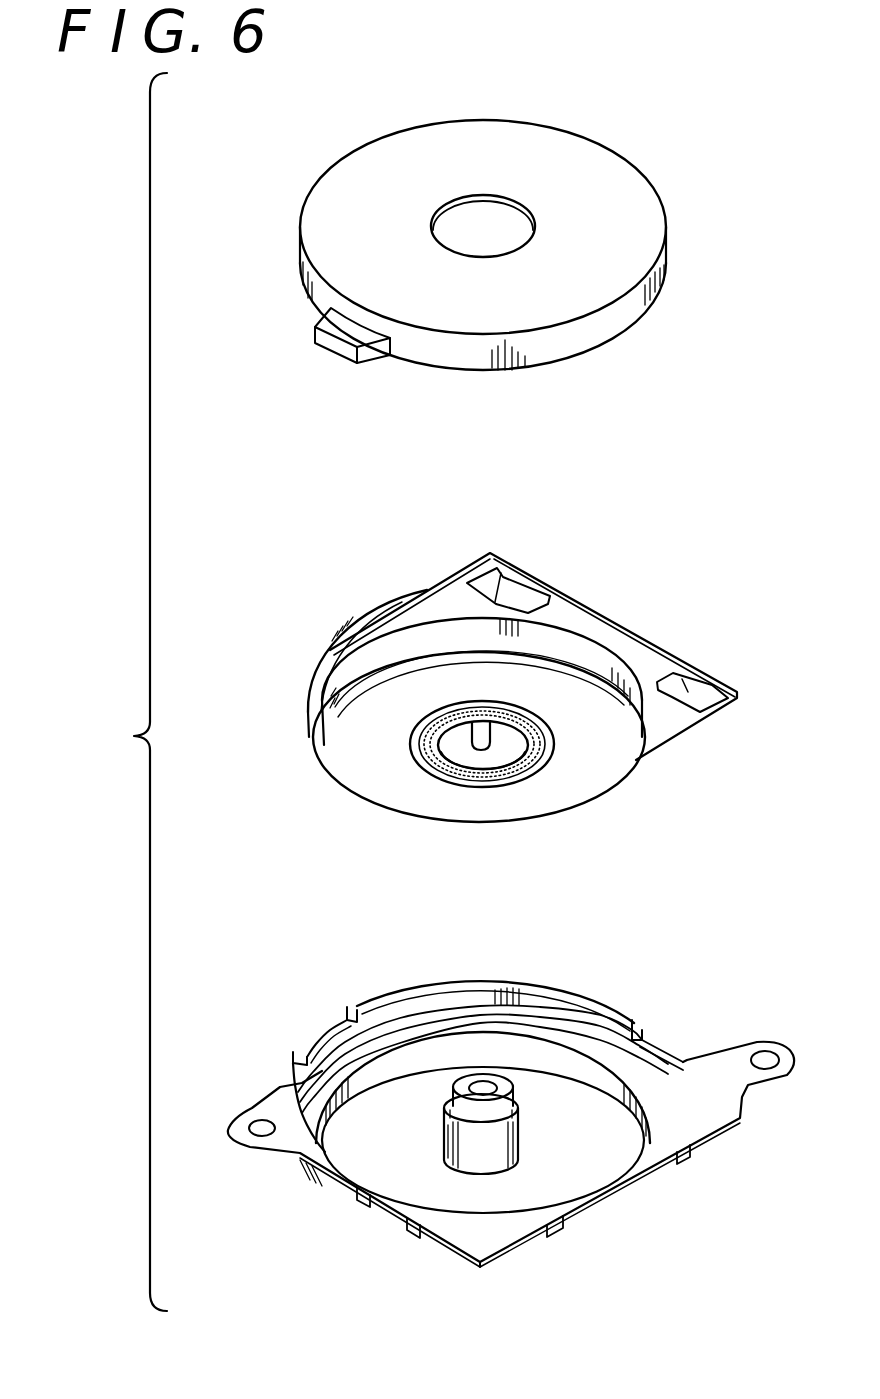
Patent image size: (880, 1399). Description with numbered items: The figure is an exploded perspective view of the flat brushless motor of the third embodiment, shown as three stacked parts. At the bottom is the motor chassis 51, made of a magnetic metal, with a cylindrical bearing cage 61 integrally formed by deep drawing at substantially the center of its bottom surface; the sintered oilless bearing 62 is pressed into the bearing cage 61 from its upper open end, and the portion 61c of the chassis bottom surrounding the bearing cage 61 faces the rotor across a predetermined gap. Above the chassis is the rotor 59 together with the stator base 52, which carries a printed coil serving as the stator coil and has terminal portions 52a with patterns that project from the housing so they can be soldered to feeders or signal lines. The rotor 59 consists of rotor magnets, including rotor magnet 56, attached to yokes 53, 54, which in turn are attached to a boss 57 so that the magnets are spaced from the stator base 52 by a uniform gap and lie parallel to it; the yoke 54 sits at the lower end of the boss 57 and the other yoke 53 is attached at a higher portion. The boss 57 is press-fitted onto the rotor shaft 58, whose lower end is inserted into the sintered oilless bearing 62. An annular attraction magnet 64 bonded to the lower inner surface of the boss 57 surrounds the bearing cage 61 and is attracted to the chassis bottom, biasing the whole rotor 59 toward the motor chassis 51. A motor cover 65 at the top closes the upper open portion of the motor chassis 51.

The motor chassis 51 is at (500, 1238).
The stator base 52 is at (633, 652).
The terminal portions 52a is at (498, 573).
The yoke 53 is at (363, 617).
The yoke 54 is at (623, 752).
The rotor magnet 56 is at (567, 633).
The boss 57 is at (440, 757).
The rotor shaft 58 is at (495, 733).
The rotor 59 is at (406, 568).
The bearing cage 61 is at (497, 1145).
The portion surrounding the bearing cage 61c is at (427, 1180).
The sintered oilless bearing 62 is at (498, 1083).
The annular attraction magnet 64 is at (537, 757).
The motor cover 65 is at (585, 162).